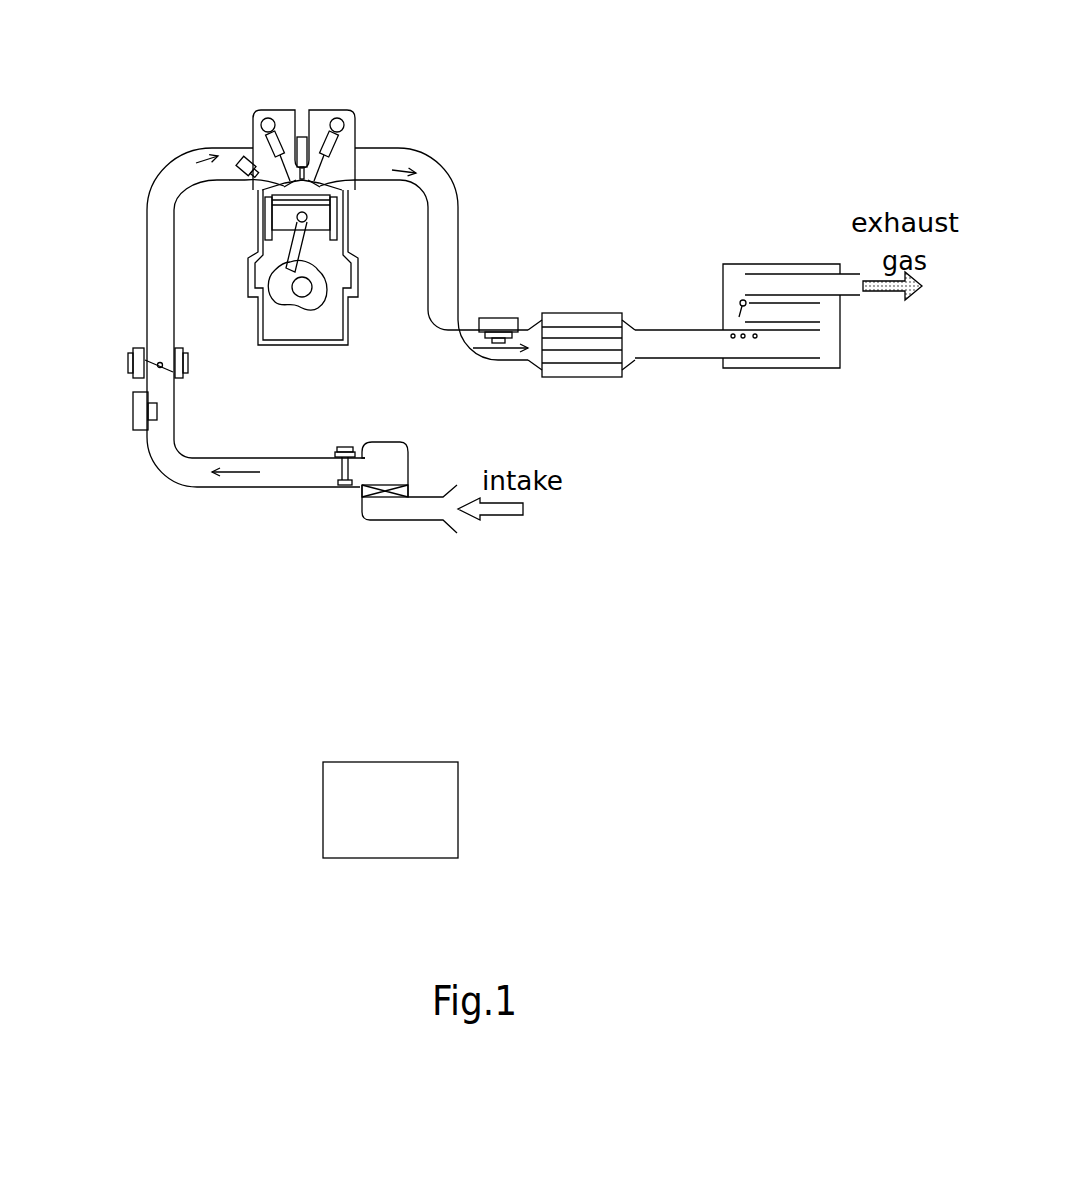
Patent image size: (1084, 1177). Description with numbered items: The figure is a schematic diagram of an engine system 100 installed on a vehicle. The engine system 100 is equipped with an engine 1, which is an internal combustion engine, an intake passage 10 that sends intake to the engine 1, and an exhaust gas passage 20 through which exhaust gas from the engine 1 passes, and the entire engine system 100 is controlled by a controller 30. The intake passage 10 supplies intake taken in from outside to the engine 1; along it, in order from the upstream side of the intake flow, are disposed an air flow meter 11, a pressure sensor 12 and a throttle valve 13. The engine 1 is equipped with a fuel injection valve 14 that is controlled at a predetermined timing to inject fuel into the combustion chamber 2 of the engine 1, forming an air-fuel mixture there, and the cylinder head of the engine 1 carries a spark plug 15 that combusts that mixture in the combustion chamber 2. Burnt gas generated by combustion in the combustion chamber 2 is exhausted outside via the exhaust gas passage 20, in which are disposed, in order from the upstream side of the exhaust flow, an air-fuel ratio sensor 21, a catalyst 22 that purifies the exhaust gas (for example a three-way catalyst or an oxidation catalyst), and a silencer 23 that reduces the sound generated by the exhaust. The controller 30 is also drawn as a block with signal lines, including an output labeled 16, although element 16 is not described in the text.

The engine system 100 is at (759, 88).
The engine 1 is at (360, 146).
The combustion chamber 2 is at (343, 207).
The intake passage 10 is at (400, 442).
The air flow meter 11 is at (346, 447).
The pressure sensor 12 is at (133, 430).
The throttle valve 13 is at (188, 367).
The fuel injection valve 14 is at (240, 166).
The spark plug 15 is at (310, 137).
The ignition plug 16 is at (340, 762).
The exhaust gas passage 20 is at (653, 330).
The air-fuel ratio sensor 21 is at (518, 318).
The catalyst 22 is at (607, 378).
The silencer 23 is at (787, 371).
The controller 30 is at (302, 56).